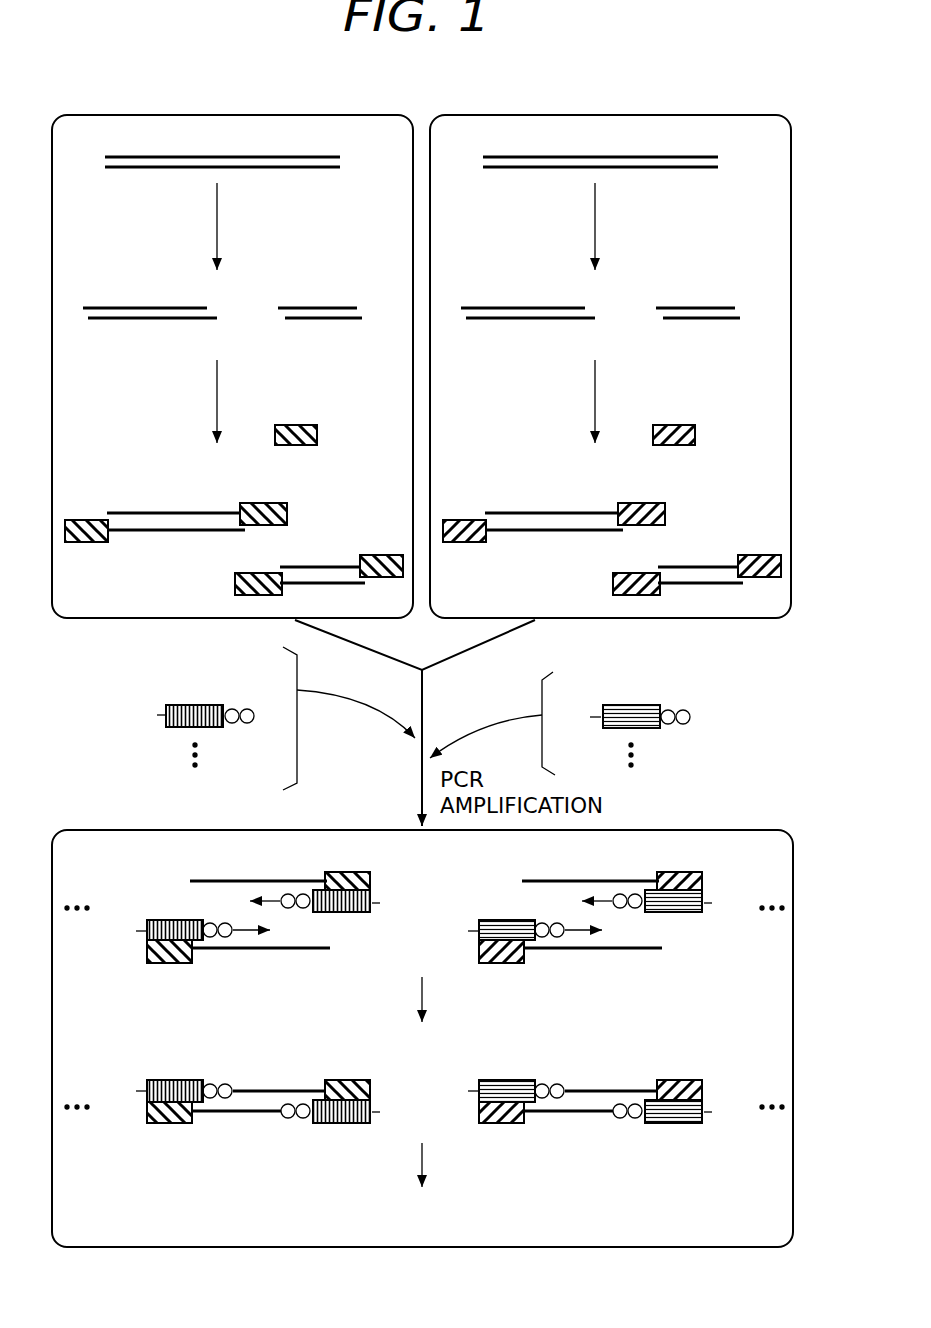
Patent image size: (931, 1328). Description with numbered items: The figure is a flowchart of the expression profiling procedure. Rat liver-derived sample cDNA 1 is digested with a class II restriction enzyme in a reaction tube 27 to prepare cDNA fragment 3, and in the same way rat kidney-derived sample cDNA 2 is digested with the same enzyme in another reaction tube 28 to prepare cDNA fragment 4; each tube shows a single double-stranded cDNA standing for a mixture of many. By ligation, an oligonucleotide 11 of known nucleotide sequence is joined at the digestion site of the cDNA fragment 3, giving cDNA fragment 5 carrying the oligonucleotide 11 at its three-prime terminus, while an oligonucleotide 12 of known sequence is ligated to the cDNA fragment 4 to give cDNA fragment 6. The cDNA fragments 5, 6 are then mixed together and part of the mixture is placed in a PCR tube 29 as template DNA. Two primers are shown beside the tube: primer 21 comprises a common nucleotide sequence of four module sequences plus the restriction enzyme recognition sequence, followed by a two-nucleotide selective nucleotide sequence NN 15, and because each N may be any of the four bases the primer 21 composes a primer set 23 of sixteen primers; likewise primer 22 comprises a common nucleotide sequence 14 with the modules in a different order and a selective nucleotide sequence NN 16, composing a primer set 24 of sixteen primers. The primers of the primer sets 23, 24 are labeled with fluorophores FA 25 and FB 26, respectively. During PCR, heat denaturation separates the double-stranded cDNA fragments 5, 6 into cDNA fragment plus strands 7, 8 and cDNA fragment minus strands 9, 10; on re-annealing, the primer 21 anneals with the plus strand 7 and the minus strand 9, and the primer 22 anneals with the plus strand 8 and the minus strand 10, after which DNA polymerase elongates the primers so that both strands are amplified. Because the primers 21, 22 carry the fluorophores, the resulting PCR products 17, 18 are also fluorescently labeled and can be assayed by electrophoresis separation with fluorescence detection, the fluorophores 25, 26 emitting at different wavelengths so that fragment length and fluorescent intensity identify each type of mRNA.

The sample cDNA 1 is at (357, 140).
The sample cDNA 2 is at (629, 160).
The cDNA fragment 3 is at (78, 338).
The cDNA fragment 4 is at (612, 301).
The cDNA fragment 5 is at (298, 503).
The cDNA fragment 6 is at (612, 550).
The cDNA fragment + strand 7 is at (257, 878).
The cDNA fragment + strand 8 is at (612, 866).
The cDNA fragment − strand 9 is at (237, 950).
The cDNA fragment − strand 10 is at (570, 972).
The oligonucleotide 11 is at (319, 433).
The oligonucleotide 12 is at (685, 449).
The common nucleotide sequence 14 is at (608, 700).
The selective nucleotide sequence NN 15 is at (247, 728).
The selective nucleotide sequence NN 16 is at (683, 729).
The PCR product 17 is at (265, 1090).
The PCR product 18 is at (170, 700).
The primer 21 is at (243, 801).
The primer 22 is at (609, 805).
The primer set 23 is at (297, 752).
The primer set 24 is at (542, 702).
The fluorophore FA 25 is at (142, 698).
The fluorophore FB 26 is at (573, 700).
The reaction tube 27 is at (90, 114).
The reaction tube 28 is at (610, 343).
The PCR tube 29 is at (92, 828).